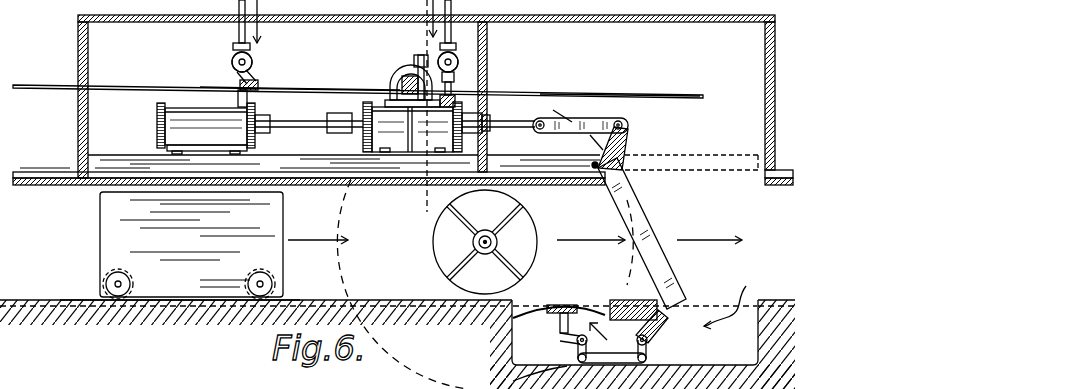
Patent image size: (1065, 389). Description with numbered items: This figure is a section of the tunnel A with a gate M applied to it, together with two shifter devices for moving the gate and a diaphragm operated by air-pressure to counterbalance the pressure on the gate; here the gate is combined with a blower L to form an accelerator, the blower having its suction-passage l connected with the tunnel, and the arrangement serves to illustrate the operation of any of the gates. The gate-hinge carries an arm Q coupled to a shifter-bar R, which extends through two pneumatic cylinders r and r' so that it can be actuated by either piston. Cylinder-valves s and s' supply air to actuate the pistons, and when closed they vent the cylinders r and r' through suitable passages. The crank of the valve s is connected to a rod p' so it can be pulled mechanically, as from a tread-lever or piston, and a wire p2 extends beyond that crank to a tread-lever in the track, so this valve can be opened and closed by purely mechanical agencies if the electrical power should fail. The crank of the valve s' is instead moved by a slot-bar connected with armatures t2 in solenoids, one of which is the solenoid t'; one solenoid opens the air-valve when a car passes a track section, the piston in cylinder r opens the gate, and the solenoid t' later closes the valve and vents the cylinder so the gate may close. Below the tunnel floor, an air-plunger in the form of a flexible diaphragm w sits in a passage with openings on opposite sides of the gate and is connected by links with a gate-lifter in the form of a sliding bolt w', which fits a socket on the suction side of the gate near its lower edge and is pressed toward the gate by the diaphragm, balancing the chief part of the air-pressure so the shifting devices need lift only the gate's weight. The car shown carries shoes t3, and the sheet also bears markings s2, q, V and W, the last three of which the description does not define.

The rod p' is at (358, 101).
The wire p2 is at (310, 83).
The pneumatic cylinder r is at (193, 128).
The pneumatic cylinder r' is at (402, 120).
The shifter-bar R is at (305, 120).
The cylinder-valve s is at (256, 53).
The cylinder-valve s' is at (458, 53).
The tie-bars s2 is at (231, 60).
The solenoid t' is at (403, 80).
The armatures t2 is at (411, 74).
The shoes t3 is at (172, 300).
The blower L is at (527, 104).
The arm Q is at (622, 143).
The gate M is at (676, 284).
The suction-passage l is at (433, 240).
The center line q is at (423, 116).
The car V is at (100, 218).
The tunnel A is at (32, 243).
The pit W is at (642, 337).
The flexible diaphragm w is at (559, 327).
The sliding bolt w' is at (622, 338).